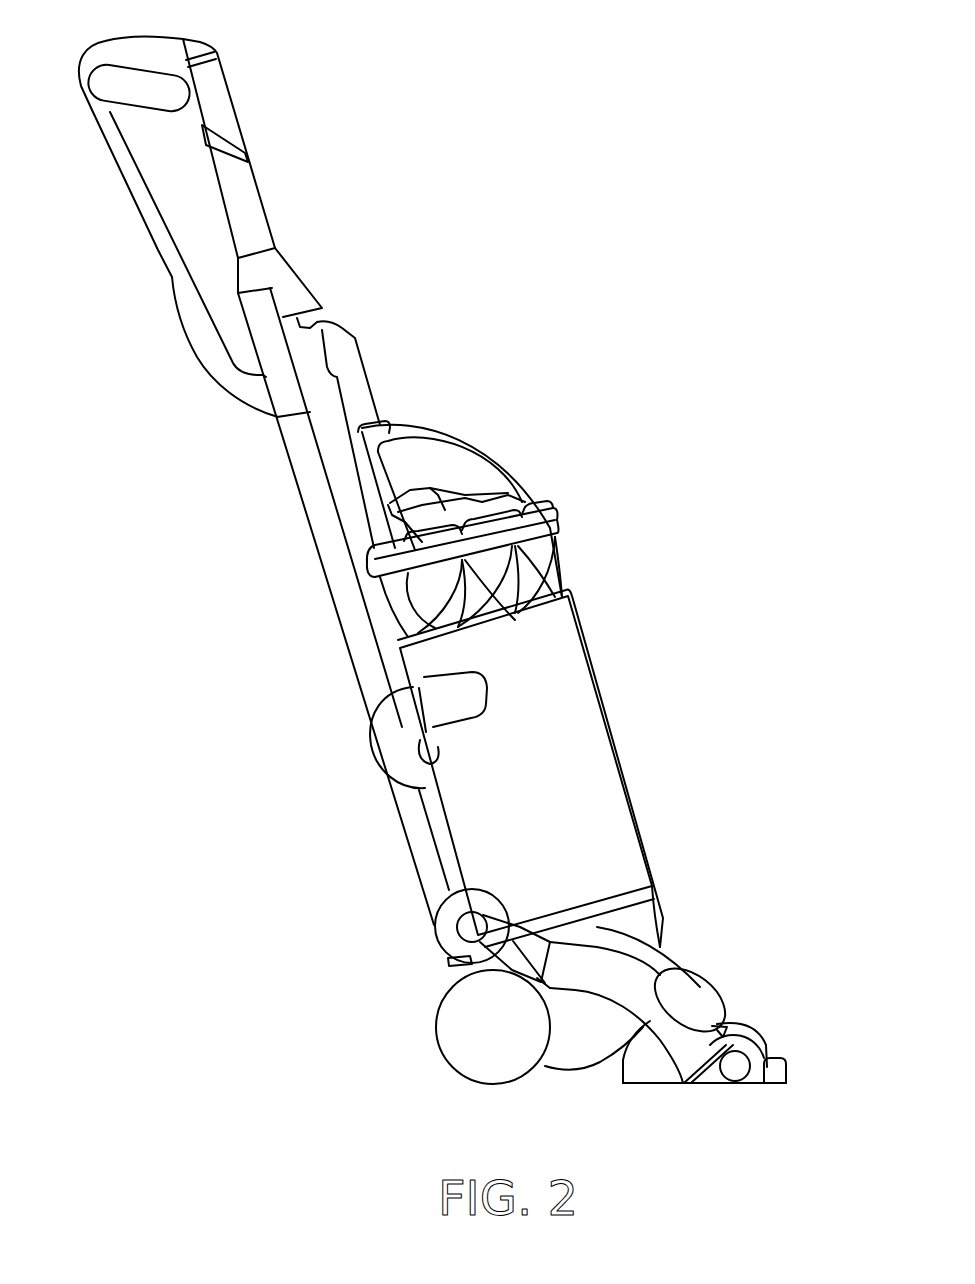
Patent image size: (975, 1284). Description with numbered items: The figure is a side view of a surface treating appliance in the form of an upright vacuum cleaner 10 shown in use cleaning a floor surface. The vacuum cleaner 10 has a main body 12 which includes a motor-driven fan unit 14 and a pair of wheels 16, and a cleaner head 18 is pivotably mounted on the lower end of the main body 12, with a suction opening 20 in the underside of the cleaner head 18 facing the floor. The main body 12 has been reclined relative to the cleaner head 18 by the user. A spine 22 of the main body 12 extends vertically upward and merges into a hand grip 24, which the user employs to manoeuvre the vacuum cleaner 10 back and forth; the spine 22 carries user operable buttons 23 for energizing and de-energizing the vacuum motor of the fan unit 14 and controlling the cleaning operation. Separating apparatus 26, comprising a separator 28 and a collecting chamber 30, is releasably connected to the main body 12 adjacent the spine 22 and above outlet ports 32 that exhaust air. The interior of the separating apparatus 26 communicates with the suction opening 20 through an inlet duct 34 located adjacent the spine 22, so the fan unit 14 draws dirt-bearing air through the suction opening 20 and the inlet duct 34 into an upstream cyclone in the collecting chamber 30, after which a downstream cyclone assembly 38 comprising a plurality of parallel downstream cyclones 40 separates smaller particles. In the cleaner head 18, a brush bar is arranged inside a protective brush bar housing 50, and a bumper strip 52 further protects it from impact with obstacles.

The vacuum cleaner 10 is at (240, 465).
The main body 12 is at (662, 922).
The motor-driven fan unit 14 is at (567, 1055).
The wheels 16 is at (457, 1023).
The cleaner head 18 is at (690, 965).
The suction opening 20 is at (735, 1087).
The spine 22 is at (345, 585).
The user operable buttons 23 is at (330, 322).
The hand grip 24 is at (100, 50).
The separating apparatus 26 is at (660, 768).
The separator 28 is at (585, 635).
The collecting chamber 30 is at (640, 827).
The outlet ports 32 is at (655, 888).
The inlet duct 34 is at (415, 772).
The downstream cyclone assembly 38 is at (578, 549).
The downstream cyclones 40 is at (422, 553).
The brush bar housing 50 is at (712, 1087).
The bumper strip 52 is at (787, 1070).